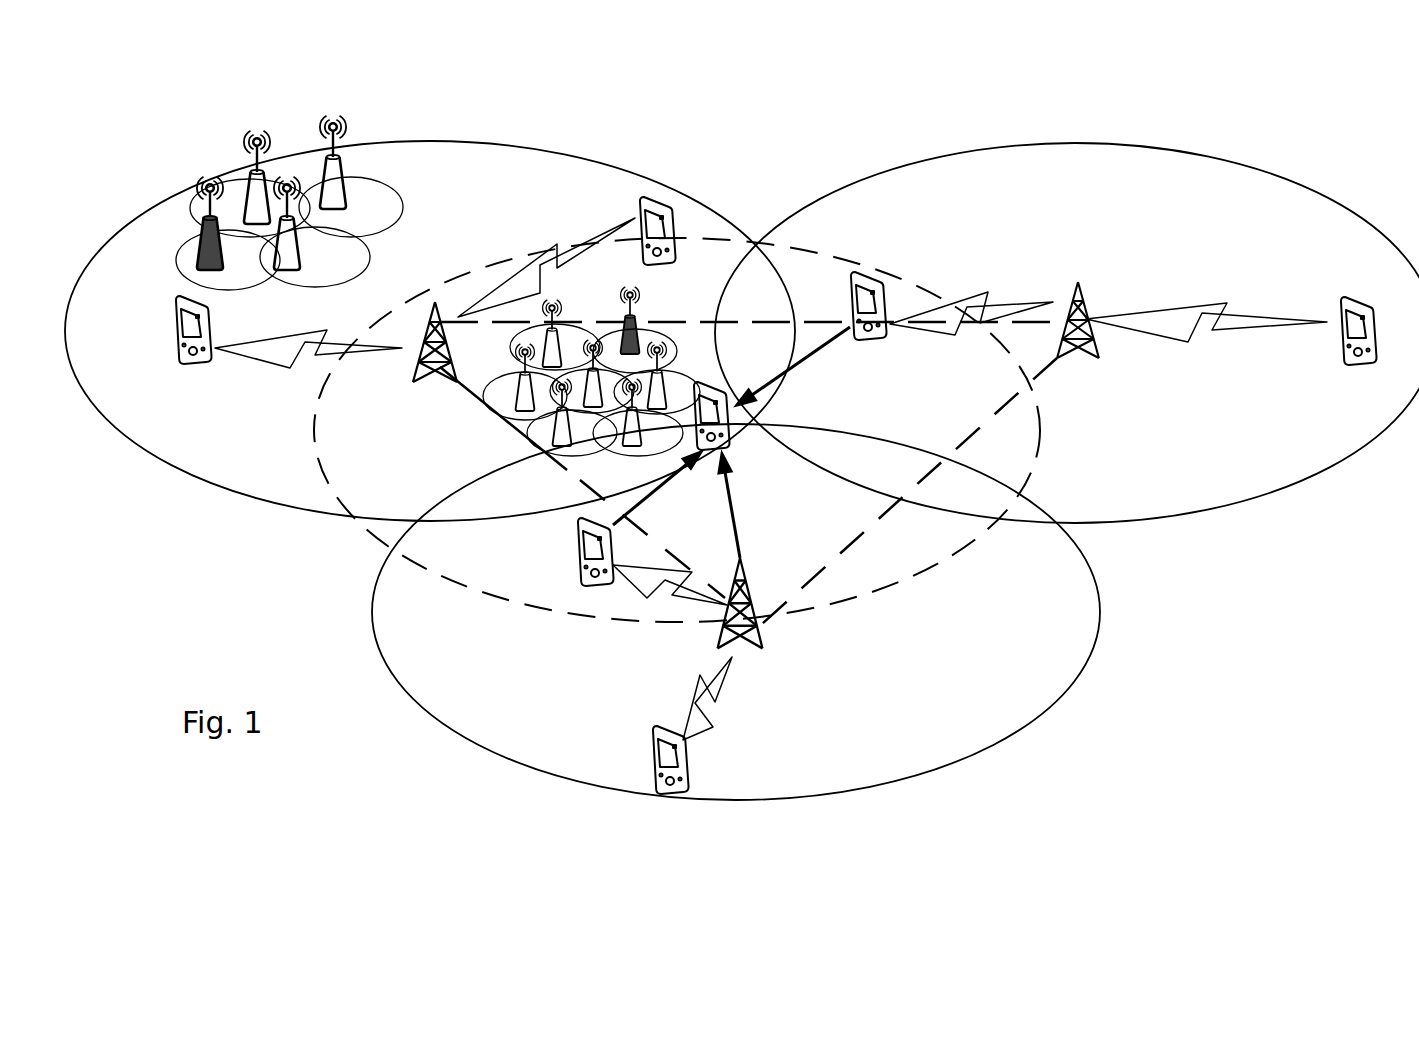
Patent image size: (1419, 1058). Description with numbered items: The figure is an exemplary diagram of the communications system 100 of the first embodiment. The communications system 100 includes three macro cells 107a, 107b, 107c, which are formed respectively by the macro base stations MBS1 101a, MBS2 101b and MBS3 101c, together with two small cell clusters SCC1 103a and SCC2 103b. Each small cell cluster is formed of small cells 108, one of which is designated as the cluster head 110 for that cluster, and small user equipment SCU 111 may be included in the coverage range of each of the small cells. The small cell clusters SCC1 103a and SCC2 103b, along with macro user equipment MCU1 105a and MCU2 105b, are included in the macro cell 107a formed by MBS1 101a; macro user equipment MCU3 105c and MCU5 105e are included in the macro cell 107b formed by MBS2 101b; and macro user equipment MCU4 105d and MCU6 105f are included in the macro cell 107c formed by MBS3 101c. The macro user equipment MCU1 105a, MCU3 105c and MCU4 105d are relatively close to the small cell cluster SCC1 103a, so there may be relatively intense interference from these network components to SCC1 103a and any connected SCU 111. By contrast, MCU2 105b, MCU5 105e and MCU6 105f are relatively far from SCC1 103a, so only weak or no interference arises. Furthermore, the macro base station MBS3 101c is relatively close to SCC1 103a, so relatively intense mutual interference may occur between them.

The communications system 100 is at (822, 47).
The macro base station MBS1 101a is at (412, 378).
The macro base station MBS2 101b is at (1100, 350).
The macro base station MBS3 101c is at (770, 640).
The small cell cluster SCC1 103a is at (512, 375).
The small cell cluster SCC2 103b is at (398, 207).
The macro user equipment MCU1 105a is at (640, 215).
The macro user equipment MCU2 105b is at (178, 345).
The macro user equipment MCU3 105c is at (852, 296).
The macro user equipment MCU4 105d is at (578, 555).
The macro user equipment MCU5 105e is at (1342, 300).
The macro user equipment MCU6 105f is at (692, 775).
The macro cell 107a is at (532, 150).
The macro cell 107b is at (1260, 168).
The macro cell 107c is at (585, 785).
The small cell 108 is at (300, 265).
The cluster head 110 is at (200, 270).
The small user equipment SCU 111 is at (740, 435).